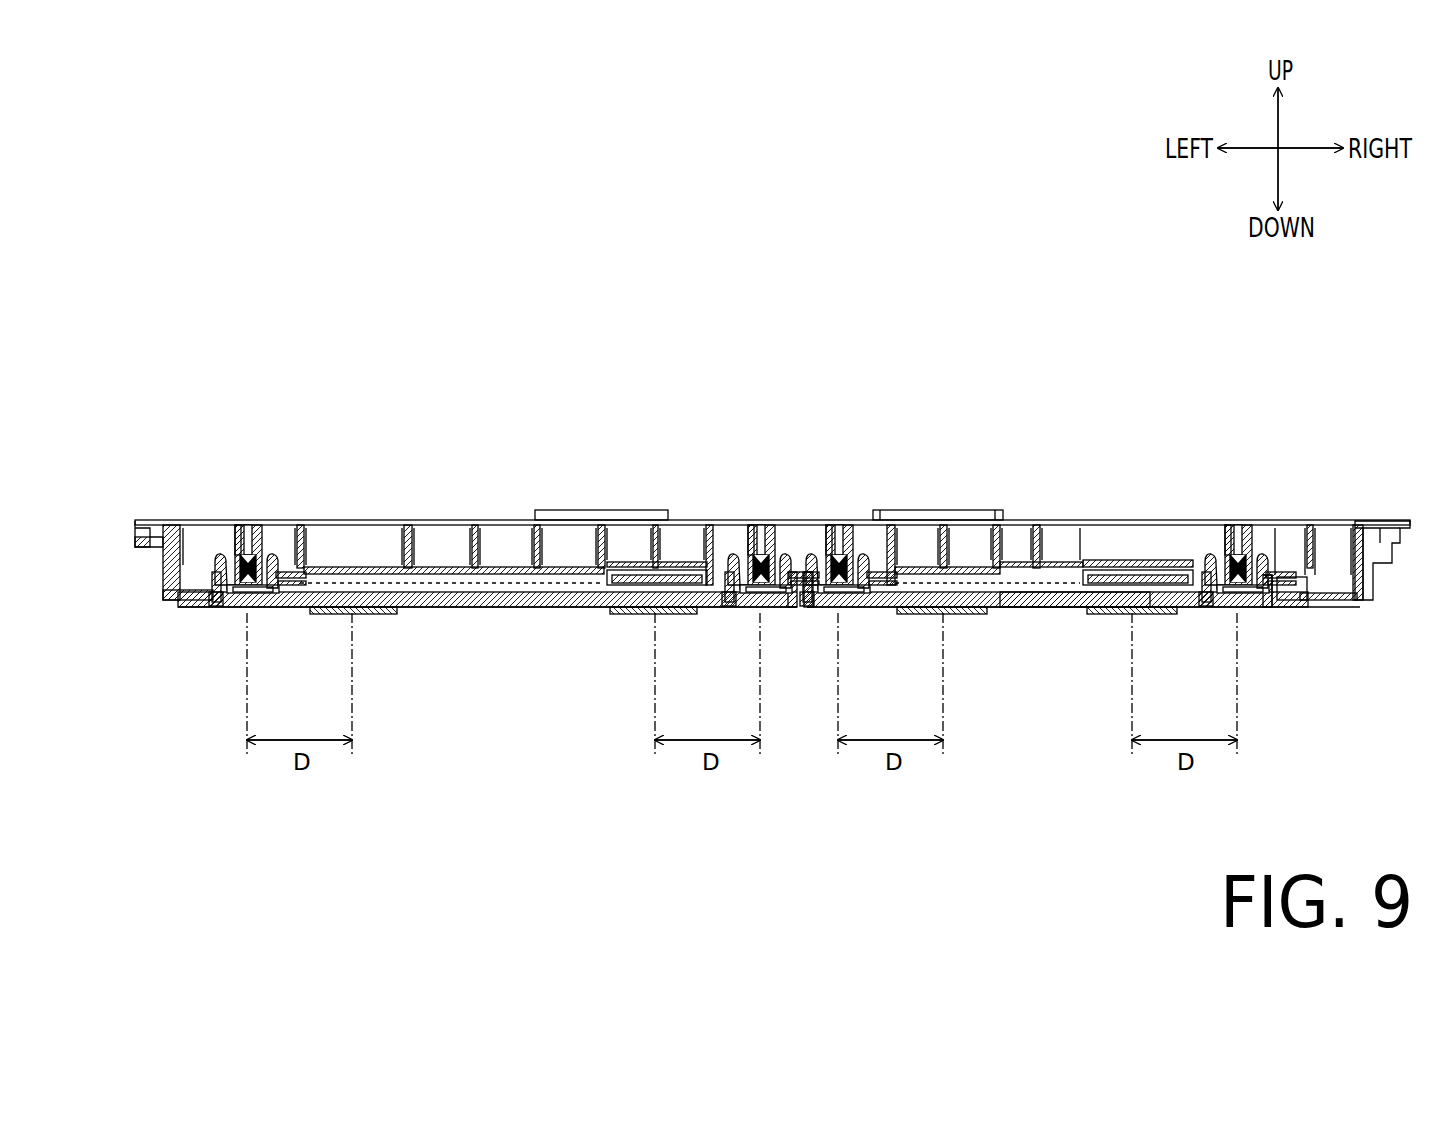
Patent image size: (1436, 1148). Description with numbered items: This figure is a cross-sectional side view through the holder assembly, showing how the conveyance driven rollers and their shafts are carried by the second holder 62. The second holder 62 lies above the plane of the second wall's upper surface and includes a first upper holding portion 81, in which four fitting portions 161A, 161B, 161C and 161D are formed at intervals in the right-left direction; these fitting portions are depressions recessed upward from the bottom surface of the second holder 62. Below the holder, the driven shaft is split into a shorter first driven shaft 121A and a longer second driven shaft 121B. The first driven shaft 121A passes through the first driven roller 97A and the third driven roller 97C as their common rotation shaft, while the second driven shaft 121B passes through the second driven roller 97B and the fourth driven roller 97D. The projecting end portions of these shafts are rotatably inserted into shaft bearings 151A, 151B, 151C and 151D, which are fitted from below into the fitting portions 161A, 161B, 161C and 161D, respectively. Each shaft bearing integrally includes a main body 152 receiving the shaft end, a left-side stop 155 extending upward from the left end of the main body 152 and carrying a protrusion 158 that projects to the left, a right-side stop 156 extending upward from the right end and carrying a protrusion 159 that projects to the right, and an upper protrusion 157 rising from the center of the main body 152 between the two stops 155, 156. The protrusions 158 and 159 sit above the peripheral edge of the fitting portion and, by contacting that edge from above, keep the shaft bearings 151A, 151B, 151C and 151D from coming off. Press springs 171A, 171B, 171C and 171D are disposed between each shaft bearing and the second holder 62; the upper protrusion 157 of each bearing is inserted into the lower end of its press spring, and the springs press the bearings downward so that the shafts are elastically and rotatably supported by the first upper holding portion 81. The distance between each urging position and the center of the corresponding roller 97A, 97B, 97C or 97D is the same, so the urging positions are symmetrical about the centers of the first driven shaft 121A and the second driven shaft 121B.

The second holder 62 is at (462, 520).
The first upper holding portion 81 is at (1122, 555).
The first driven roller 97A is at (1110, 614).
The second driven roller 97B is at (608, 614).
The third driven roller 97C is at (957, 614).
The fourth driven roller 97D is at (383, 615).
The first driven shaft 121A is at (1051, 606).
The second driven shaft 121B is at (493, 606).
The shaft bearing 151A is at (1208, 553).
The shaft bearing 151B is at (732, 557).
The shaft bearing 151C is at (818, 558).
The shaft bearing 151D is at (228, 552).
The main body 152 is at (236, 606).
The left-side stop 155 is at (214, 600).
The right-side stop 156 is at (274, 608).
The upper protrusion 157 is at (249, 608).
The protrusion 158 is at (197, 548).
The protrusion 159 is at (272, 556).
The fitting portion 161A is at (1212, 612).
The fitting portion 161B is at (745, 614).
The fitting portion 161C is at (808, 614).
The fitting portion 161D is at (222, 612).
The press spring 171A is at (1237, 556).
The press spring 171B is at (760, 555).
The press spring 171C is at (843, 557).
The press spring 171D is at (246, 556).